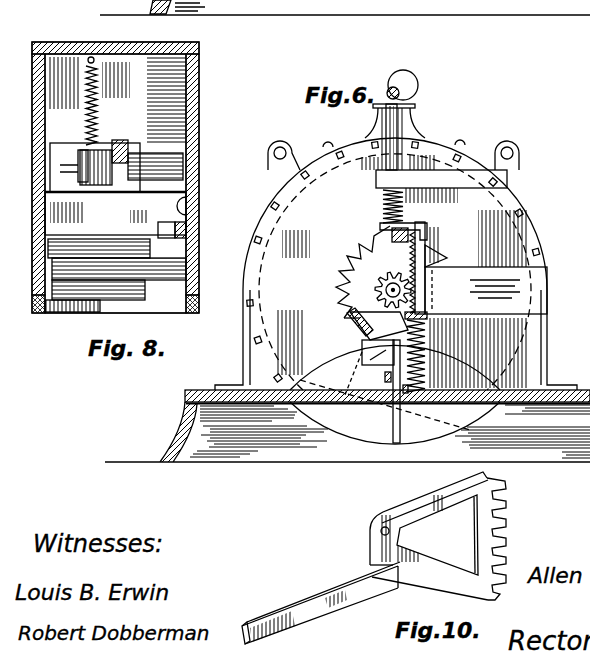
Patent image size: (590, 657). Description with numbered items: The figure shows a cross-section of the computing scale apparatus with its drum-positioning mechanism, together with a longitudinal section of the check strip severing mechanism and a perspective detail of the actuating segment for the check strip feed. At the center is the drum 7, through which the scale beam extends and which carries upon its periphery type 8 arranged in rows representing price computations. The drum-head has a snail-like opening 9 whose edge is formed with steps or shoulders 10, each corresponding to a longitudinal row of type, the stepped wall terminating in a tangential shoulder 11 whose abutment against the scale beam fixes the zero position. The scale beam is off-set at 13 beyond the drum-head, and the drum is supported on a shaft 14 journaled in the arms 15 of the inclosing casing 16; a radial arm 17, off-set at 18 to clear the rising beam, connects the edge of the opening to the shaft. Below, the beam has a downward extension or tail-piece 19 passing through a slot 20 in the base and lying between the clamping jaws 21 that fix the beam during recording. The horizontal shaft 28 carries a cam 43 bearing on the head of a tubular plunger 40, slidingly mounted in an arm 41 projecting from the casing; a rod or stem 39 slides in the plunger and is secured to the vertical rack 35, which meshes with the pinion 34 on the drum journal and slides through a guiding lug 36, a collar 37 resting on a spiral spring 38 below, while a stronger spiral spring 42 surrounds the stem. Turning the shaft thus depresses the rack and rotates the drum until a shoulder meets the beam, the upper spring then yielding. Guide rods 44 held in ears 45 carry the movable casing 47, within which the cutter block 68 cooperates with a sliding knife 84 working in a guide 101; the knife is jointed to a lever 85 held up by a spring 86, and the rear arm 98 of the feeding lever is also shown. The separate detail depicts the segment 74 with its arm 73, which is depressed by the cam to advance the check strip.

In FIG. 6, the drum 7 is at (262, 232).
In FIG. 6, the type 8 is at (260, 338).
In FIG. 6, the opening 9 is at (370, 252).
In FIG. 6, the steps or shoulders 10 is at (440, 258).
In FIG. 6, the tangential shoulder 11 is at (360, 352).
In FIG. 6, the off-set 13 is at (360, 373).
In FIG. 6, the shaft 14 is at (345, 268).
In FIG. 6, the arms 15 is at (486, 299).
In FIG. 6, the inclosing casing 16 is at (538, 246).
In FIG. 6, the radial arm 17 is at (355, 301).
In FIG. 6, the off-set 18 is at (352, 325).
In FIG. 6, the downward extension or tail-piece 19 is at (395, 441).
In FIG. 6, the slot 20 is at (382, 401).
In FIG. 6, the clamping jaws 21 is at (365, 396).
In FIG. 6, the horizontal shaft 28 is at (393, 86).
In FIG. 6, the spur-gear or pinion 34 is at (380, 289).
In FIG. 6, the vertical rack 35 is at (425, 228).
In FIG. 6, the guiding lug 36 is at (428, 315).
In FIG. 6, the collar 37 is at (426, 322).
In FIG. 6, the spiral spring 38 is at (428, 371).
In FIG. 6, the rod or stem 39 is at (410, 156).
In FIG. 6, the tubular plunger 40 is at (418, 122).
In FIG. 6, the arm 41 is at (465, 172).
In FIG. 6, the spiral spring 42 is at (500, 193).
In FIG. 6, the cam 43 is at (416, 76).
In FIG. 6, the guide rods 44 is at (279, 148).
In FIG. 6, the ears 45 is at (282, 173).
In FIG. 8, the casing 47 is at (43, 42).
In FIG. 8, the cutter block 68 is at (88, 292).
In FIG. 10, the arm 73 is at (292, 603).
In FIG. 10, the segment 74 is at (508, 542).
In FIG. 8, the sliding knife 84 is at (58, 170).
In FIG. 8, the lever 85 is at (118, 141).
In FIG. 8, the spring 86 is at (98, 72).
In FIG. 8, the rear arm 98 is at (199, 238).
In FIG. 8, the guide 101 is at (115, 215).